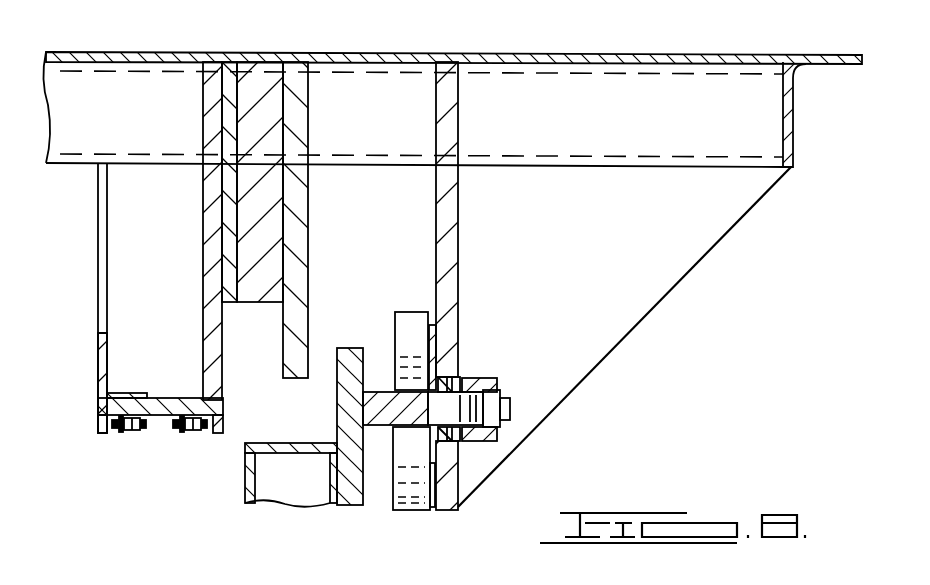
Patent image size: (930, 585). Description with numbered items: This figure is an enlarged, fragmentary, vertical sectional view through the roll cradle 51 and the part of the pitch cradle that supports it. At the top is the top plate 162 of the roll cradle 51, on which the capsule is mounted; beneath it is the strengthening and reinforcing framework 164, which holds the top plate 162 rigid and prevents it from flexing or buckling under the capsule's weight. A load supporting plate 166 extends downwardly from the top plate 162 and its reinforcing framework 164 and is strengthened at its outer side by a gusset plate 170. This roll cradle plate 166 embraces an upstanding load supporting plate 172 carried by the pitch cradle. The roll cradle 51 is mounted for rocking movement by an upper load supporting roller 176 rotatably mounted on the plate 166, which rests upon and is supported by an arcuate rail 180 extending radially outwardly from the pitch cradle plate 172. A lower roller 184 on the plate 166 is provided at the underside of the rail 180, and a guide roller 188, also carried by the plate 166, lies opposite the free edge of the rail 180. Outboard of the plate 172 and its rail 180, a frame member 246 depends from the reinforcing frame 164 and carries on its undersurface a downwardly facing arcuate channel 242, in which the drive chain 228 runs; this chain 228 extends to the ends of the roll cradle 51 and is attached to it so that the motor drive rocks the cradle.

The roll cradle 51 is at (588, 20).
The top plate 162 is at (683, 40).
The strengthening and reinforcing framework 164 is at (800, 128).
The load supporting plate 166 is at (458, 240).
The gusset plate 170 is at (645, 293).
The load supporting plate 172 is at (353, 500).
The load supporting roller 176 is at (398, 312).
The arcuate rail 180 is at (446, 375).
The lower roller 184 is at (415, 508).
The guide roller 188 is at (492, 395).
The drive chain 228 is at (192, 435).
The arcuate channel 242 is at (157, 410).
The frame member 246 is at (199, 220).